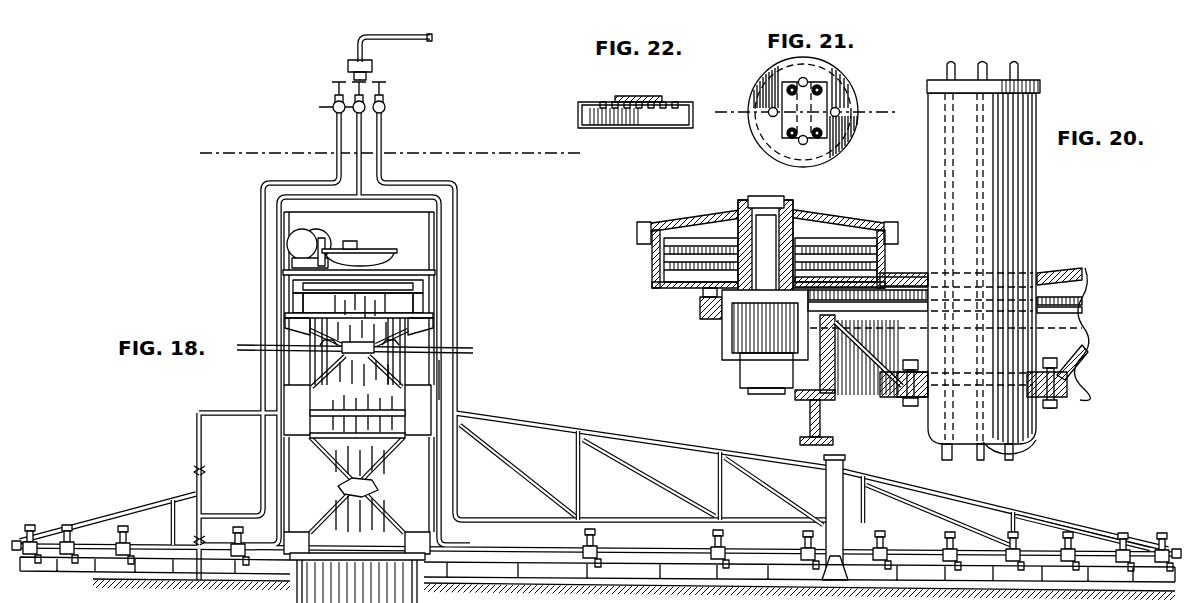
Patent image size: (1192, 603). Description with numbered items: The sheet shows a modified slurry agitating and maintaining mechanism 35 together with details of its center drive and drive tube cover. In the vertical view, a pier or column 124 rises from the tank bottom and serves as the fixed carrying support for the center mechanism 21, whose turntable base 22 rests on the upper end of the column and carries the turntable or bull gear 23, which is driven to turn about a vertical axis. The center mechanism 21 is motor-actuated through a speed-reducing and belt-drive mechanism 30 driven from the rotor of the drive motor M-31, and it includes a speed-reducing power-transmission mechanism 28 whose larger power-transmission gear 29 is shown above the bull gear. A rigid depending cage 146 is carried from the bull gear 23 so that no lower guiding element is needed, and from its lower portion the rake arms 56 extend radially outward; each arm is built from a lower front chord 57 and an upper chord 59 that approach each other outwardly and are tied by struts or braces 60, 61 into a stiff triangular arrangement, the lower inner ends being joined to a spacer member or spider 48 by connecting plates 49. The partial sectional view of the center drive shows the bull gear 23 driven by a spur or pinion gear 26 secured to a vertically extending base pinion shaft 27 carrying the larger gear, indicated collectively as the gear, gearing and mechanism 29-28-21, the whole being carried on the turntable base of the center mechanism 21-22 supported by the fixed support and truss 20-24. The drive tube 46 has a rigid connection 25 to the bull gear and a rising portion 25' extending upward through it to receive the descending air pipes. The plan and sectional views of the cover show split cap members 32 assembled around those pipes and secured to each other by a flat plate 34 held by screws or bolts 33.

In FIG. 18, the drive motor and rotor M-31 is at (303, 241).
In FIG. 18, the speed-reducing and belt-drive mechanism 30 is at (349, 244).
In FIG. 18, the center mechanism 21 is at (500, 272).
In FIG. 20, the center mechanism 21 is at (1128, 342).
In FIG. 18, the speed-reducing power-transmission mechanism 28 is at (427, 246).
In FIG. 18, the power-transmission gear 29 is at (377, 250).
In FIG. 18, the turntable 23 is at (430, 281).
In FIG. 20, the turntable 23 is at (1063, 318).
In FIG. 18, the turntable base 22 is at (393, 289).
In FIG. 21, the turntable base 22 is at (720, 103).
In FIG. 18, the depending cage 146 is at (430, 400).
In FIG. 18, the slurry agitating and maintaining mechanism 35 is at (524, 384).
In FIG. 18, the pier or column 124 is at (357, 466).
In FIG. 18, the rake arms 56 is at (485, 470).
In FIG. 18, the upper chord or longitudinal 59 is at (512, 440).
In FIG. 18, the lower front chord or longitudinal 57 is at (493, 557).
In FIG. 18, the strut, brace, or tie member 61 is at (518, 489).
In FIG. 18, the strut, brace, or tie member 60 is at (582, 500).
In FIG. 18, the connecting plates 49 is at (268, 555).
In FIG. 18, the intermediate spacer member or spider 48 is at (427, 560).
In FIG. 20, the power-transmission gear, speed-reducing mechanism and center mechanism 29-28-21 is at (807, 258).
In FIG. 20, the base pinion shaft 27 is at (705, 297).
In FIG. 20, the spur or pinion gear 26 is at (730, 323).
In FIG. 20, the center mechanism and turntable base 21-22 is at (795, 393).
In FIG. 20, the fixed support and truss 20-24 is at (808, 420).
In FIG. 20, the rising portion of drive tube 25' is at (1007, 261).
In FIG. 20, the rigid connection 25 is at (1066, 395).
In FIG. 20, the drive tube 46 is at (1033, 433).
In FIG. 21, the split cap members 32 is at (762, 86).
In FIG. 22, the split cap members 32 is at (580, 106).
In FIG. 21, the screws or bolts 33 is at (833, 152).
In FIG. 22, the screws or bolts 33 is at (623, 97).
In FIG. 21, the securing element or flat plate 34 is at (818, 100).
In FIG. 22, the securing element or flat plate 34 is at (641, 97).